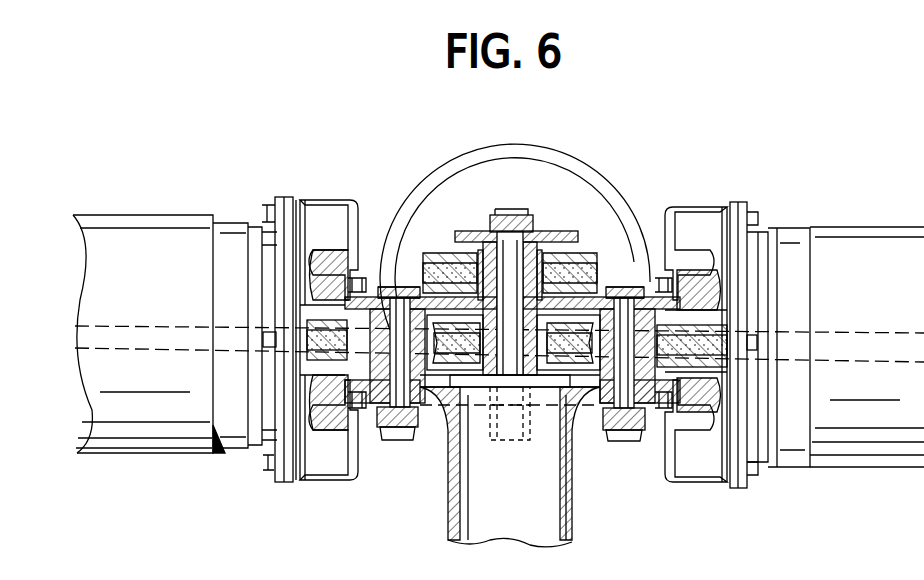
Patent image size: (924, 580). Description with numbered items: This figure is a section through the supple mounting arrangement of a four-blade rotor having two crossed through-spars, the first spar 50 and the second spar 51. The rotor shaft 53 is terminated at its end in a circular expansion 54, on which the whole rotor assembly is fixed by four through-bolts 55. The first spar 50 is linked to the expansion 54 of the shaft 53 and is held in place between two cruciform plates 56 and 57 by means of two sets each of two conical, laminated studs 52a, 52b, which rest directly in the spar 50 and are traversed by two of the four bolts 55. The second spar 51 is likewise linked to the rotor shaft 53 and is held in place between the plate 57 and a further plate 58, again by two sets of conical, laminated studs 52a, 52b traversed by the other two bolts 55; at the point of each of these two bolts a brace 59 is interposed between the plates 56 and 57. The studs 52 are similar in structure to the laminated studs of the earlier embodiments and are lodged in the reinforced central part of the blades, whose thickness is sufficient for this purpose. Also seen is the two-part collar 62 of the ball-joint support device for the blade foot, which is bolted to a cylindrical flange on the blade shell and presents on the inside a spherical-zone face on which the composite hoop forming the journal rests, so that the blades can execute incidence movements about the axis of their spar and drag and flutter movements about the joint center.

The first spar 50 is at (697, 350).
The second spar 51 is at (624, 275).
The conical laminated stud 52 is at (410, 278).
The conical laminated stud 52a is at (388, 290).
The conical laminated stud 52b is at (383, 403).
The rotor shaft 53 is at (573, 507).
The circular expansion 54 is at (583, 405).
The through-bolt 55 is at (510, 210).
The cruciform plate 56 is at (322, 405).
The cruciform plate 57 is at (325, 272).
The plate 58 is at (470, 236).
The brace 59 is at (543, 392).
The collar 62 is at (553, 148).